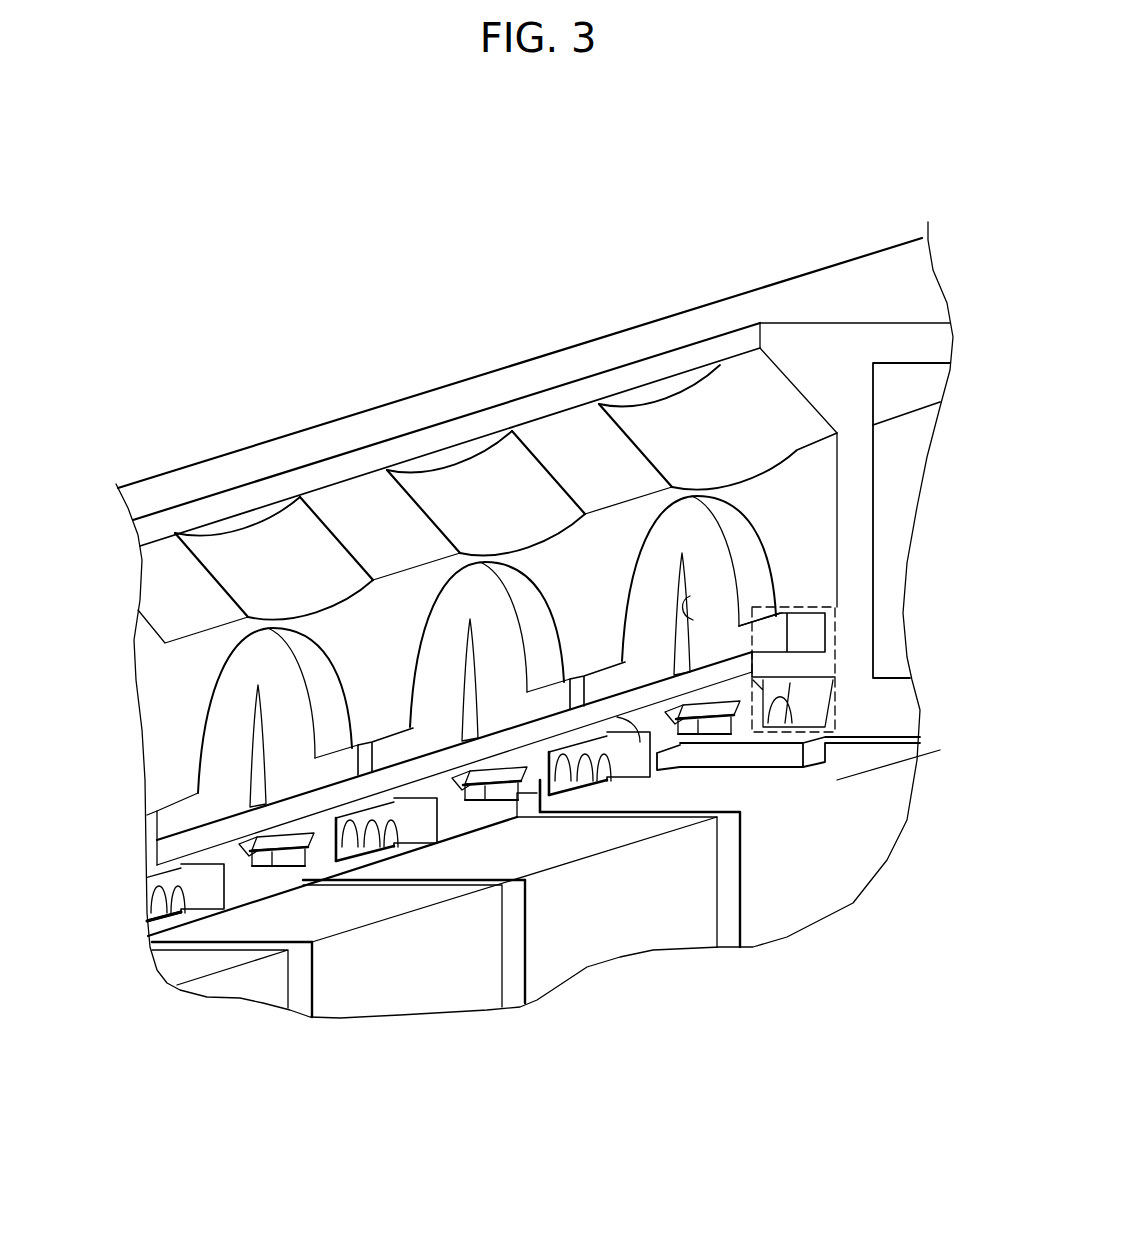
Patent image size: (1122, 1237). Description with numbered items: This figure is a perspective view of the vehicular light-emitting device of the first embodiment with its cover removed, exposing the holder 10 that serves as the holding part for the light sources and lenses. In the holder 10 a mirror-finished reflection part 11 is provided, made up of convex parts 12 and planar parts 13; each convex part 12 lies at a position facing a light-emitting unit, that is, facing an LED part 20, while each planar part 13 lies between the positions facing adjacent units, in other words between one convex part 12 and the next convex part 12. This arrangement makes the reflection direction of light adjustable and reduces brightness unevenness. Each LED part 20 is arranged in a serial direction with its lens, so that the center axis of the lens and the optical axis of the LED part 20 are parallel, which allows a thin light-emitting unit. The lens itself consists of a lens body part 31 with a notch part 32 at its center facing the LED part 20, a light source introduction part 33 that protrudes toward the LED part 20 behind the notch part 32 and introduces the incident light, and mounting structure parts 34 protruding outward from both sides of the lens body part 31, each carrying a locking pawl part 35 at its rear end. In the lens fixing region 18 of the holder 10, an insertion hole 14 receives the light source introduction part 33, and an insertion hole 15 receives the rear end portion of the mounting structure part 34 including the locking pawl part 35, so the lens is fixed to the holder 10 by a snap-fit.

The holder 10 is at (855, 480).
The reflection part 11 is at (664, 260).
The convex part 12 is at (238, 545).
The planar part 13 is at (357, 507).
The insertion hole 14 is at (538, 792).
The insertion hole 15 is at (638, 745).
The lens fixing region 18 is at (157, 852).
The LED part 20 is at (750, 752).
The lens body part 31 is at (707, 557).
The notch part 32 is at (688, 592).
The light source introduction part 33 is at (500, 787).
The mounting structure part 34 is at (836, 623).
The locking pawl part 35 is at (619, 768).